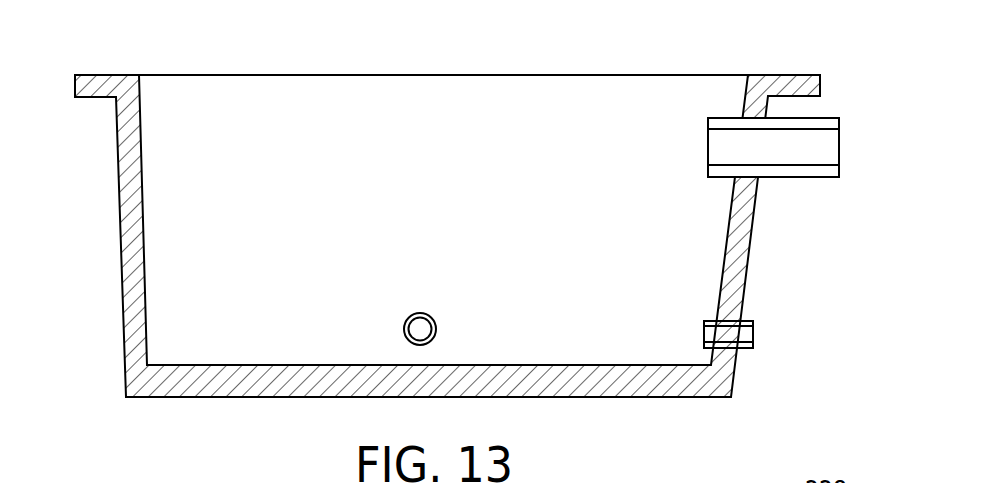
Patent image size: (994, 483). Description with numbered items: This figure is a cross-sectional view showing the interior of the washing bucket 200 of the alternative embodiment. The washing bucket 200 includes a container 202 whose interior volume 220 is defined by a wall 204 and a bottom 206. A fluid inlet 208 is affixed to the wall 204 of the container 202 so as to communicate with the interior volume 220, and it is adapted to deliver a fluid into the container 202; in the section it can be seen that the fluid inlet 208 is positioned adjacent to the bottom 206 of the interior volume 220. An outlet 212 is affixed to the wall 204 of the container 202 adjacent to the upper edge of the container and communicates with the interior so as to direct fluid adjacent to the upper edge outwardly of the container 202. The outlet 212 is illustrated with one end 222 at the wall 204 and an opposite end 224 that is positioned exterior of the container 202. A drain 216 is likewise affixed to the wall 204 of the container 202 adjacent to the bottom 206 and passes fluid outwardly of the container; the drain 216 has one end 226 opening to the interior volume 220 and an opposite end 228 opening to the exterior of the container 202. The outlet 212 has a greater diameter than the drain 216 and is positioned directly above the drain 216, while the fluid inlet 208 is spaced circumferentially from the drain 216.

The washing bucket 200 is at (477, 205).
The container 202 is at (121, 222).
The wall 204 is at (752, 287).
The bottom 206 is at (280, 365).
The fluid inlet 208 is at (426, 322).
The outlet 212 is at (827, 118).
The drain 216 is at (753, 349).
The interior volume 220 is at (428, 84).
The one end 222 is at (706, 160).
The opposite end 224 is at (840, 178).
The one end 226 is at (703, 328).
The opposite end 228 is at (755, 322).